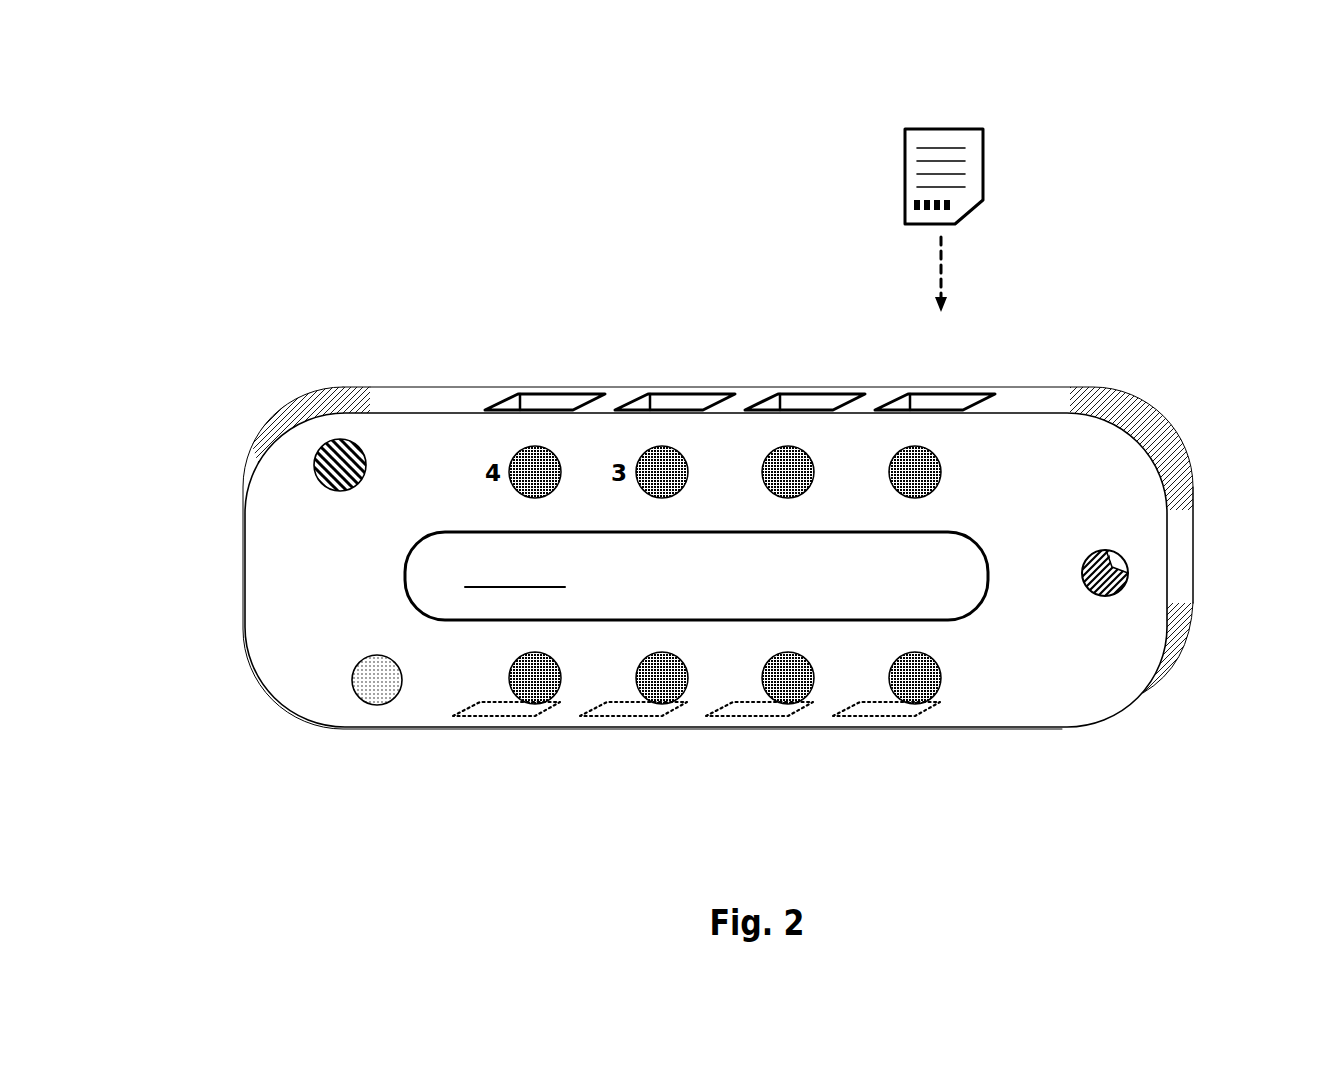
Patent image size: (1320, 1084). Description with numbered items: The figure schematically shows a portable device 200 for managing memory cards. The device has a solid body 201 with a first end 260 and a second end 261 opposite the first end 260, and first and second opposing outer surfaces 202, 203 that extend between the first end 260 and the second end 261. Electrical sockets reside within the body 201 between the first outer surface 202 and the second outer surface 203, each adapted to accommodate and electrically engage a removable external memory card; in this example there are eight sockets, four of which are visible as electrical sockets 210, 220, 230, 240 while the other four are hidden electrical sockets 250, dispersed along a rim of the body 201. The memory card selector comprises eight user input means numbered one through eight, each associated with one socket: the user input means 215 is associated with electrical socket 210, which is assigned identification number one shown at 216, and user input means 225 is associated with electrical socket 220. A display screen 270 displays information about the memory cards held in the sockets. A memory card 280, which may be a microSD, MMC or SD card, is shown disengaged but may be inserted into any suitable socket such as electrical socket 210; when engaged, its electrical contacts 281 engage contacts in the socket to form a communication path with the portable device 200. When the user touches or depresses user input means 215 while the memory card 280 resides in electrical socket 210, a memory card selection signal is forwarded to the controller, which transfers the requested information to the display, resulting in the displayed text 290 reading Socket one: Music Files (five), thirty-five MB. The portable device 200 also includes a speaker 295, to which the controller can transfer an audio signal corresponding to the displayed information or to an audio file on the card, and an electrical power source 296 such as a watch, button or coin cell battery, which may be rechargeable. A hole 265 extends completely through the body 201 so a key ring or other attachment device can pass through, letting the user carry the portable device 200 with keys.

The portable device 200 is at (296, 280).
The body 201 is at (277, 697).
The first outer surface 202 is at (1101, 678).
The second outer surface 203 is at (1166, 395).
The electrical socket 210 is at (930, 403).
The user input means 215 is at (938, 460).
The identification number 216 is at (875, 495).
The electrical socket 220 is at (803, 403).
The user input means 225 is at (762, 453).
The electrical socket 230 is at (676, 403).
The electrical socket 240 is at (553, 403).
The hidden electrical sockets 250 is at (473, 755).
The first end 260 is at (245, 562).
The second end 261 is at (1182, 555).
The hole 265 is at (1127, 567).
The display screen 270 is at (405, 580).
The memory card 280 is at (983, 155).
The electrical contacts 281 is at (915, 202).
The displayed text 290 is at (463, 535).
The speaker 295 is at (315, 477).
The electrical power source 296 is at (378, 700).